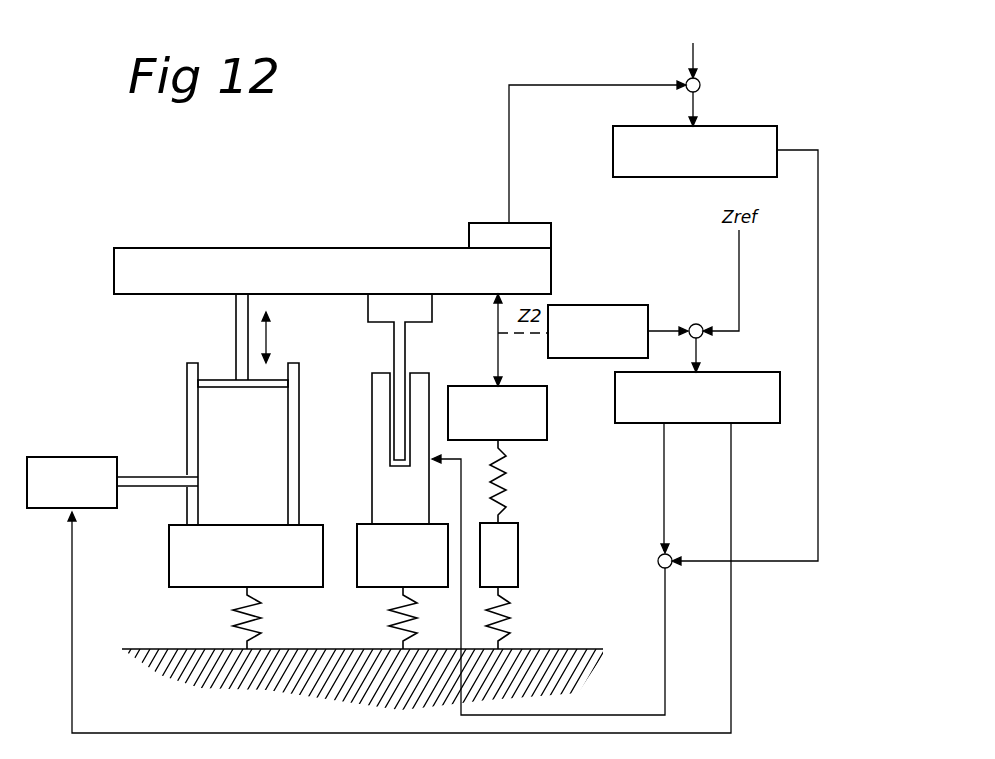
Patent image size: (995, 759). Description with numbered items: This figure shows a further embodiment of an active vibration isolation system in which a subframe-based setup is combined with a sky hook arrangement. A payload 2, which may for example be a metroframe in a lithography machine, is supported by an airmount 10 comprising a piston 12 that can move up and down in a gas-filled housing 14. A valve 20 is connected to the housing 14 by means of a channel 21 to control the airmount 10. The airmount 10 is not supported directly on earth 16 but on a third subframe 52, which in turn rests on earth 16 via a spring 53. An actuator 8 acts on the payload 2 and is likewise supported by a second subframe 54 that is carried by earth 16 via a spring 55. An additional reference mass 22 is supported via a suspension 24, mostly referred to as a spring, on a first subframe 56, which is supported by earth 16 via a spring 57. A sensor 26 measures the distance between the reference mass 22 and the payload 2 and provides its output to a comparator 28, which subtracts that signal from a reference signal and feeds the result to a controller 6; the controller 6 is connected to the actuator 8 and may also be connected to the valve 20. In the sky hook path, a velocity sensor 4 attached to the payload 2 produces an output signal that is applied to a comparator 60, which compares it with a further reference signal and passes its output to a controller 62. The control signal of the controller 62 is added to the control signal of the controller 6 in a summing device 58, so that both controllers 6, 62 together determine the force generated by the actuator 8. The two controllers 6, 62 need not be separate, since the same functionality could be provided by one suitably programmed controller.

The payload 2 is at (222, 264).
The velocity sensor 4 is at (479, 226).
The controller 6 is at (740, 380).
The actuator 8 is at (420, 352).
The airmount 10 is at (287, 338).
The piston 12 is at (228, 390).
The housing 14 is at (277, 432).
The earth 16 is at (545, 665).
The valve 20 is at (37, 510).
The channel 21 is at (155, 480).
The additional reference mass 22 is at (528, 428).
The suspension 24 is at (505, 480).
The sensor 26 is at (608, 312).
The comparator 28 is at (696, 323).
The third subframe 52 is at (192, 558).
The spring 53 is at (240, 626).
The second subframe 54 is at (375, 543).
The spring 55 is at (395, 626).
The first subframe 56 is at (513, 545).
The spring 57 is at (505, 603).
The summing device 58 is at (658, 564).
The comparator 60 is at (700, 90).
The controller 62 is at (762, 135).